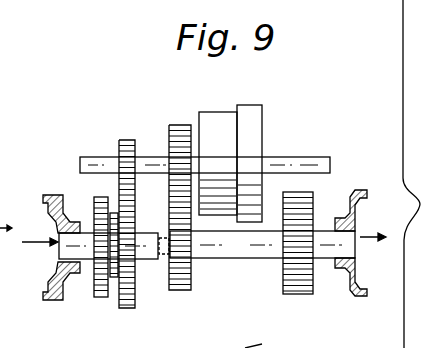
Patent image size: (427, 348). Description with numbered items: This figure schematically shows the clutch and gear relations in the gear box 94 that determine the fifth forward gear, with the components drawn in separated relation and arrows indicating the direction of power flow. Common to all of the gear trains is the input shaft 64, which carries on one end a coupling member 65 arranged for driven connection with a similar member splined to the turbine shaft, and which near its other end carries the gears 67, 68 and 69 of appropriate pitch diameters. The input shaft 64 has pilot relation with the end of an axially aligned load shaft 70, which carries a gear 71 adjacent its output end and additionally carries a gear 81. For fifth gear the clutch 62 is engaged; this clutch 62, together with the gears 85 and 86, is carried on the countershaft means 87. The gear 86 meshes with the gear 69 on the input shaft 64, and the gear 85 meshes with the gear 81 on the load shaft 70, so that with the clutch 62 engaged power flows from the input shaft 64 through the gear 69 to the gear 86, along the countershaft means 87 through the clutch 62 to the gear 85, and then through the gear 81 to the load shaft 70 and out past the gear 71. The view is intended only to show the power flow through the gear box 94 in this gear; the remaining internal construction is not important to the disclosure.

The clutch 62 is at (262, 120).
The input shaft 64 is at (88, 263).
The coupling member 65 is at (47, 194).
The gear 67 is at (101, 298).
The gear 68 is at (114, 278).
The gear 69 is at (130, 309).
The load shaft 70 is at (242, 254).
The gear 71 is at (303, 295).
The gear 81 is at (184, 291).
The gear 85 is at (176, 125).
The gear 86 is at (126, 140).
The countershaft means 87 is at (298, 156).
The gear box 94 is at (401, 68).